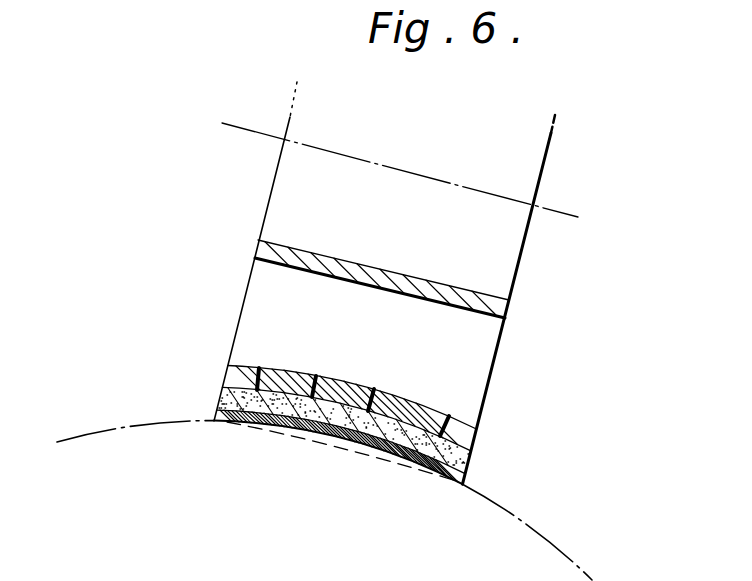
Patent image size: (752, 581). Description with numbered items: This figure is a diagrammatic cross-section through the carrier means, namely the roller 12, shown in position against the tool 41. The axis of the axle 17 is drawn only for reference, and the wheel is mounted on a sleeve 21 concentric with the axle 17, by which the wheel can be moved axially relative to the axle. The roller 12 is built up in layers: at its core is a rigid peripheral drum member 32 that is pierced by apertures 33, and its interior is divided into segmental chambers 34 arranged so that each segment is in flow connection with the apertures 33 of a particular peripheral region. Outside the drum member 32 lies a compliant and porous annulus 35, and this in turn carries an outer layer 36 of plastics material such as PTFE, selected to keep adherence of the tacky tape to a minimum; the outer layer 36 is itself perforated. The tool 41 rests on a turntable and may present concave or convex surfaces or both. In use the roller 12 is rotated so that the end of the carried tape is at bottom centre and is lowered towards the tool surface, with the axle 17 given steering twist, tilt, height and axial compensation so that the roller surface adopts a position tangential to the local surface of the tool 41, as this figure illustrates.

The roller 12 is at (515, 332).
The axle 17 is at (570, 214).
The sleeve 21 is at (513, 277).
The rigid peripheral drum member 32 is at (470, 410).
The apertures 33 is at (267, 382).
The segmental chambers 34 is at (258, 269).
The compliant and porous annulus 35 is at (468, 453).
The outer layer 36 is at (390, 452).
The tool 41 is at (575, 560).